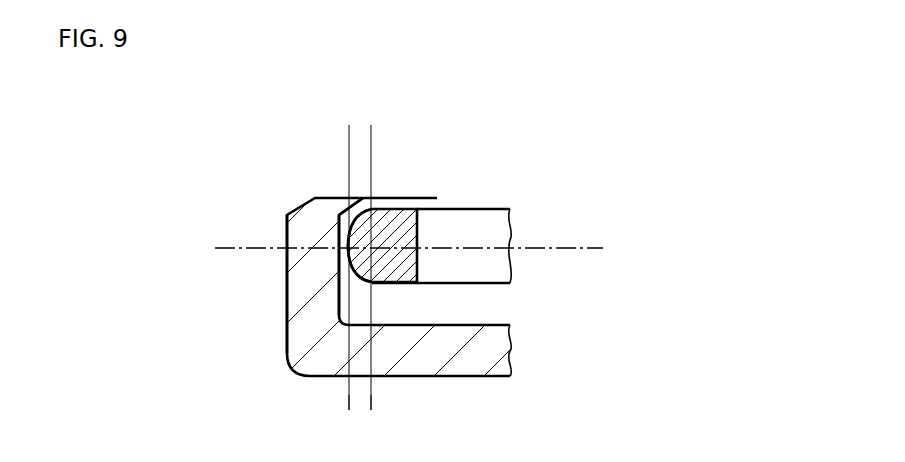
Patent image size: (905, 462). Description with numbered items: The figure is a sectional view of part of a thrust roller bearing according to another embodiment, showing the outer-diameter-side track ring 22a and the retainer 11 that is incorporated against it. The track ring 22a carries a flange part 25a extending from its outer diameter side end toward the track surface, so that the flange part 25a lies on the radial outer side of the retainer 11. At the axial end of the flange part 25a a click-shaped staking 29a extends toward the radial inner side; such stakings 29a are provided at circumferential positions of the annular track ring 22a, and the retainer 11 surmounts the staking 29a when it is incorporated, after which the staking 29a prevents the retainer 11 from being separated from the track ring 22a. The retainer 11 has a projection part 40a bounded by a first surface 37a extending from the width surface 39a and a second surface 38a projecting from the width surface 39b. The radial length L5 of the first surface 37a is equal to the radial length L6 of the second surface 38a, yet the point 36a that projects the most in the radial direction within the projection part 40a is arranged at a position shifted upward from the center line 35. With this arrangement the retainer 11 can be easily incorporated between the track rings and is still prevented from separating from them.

The retainer 11 is at (398, 287).
The track ring 22a is at (479, 365).
The flange part 25a is at (293, 260).
The staking 29a is at (345, 208).
The center line 35 is at (583, 248).
The point 36a is at (348, 237).
The first surface 37a is at (360, 223).
The second surface 38a is at (353, 278).
The width surface 39a is at (422, 197).
The width surface 39b is at (423, 284).
The projection part 40a is at (342, 261).
The radial length L5 is at (393, 135).
The radial length L6 is at (392, 402).